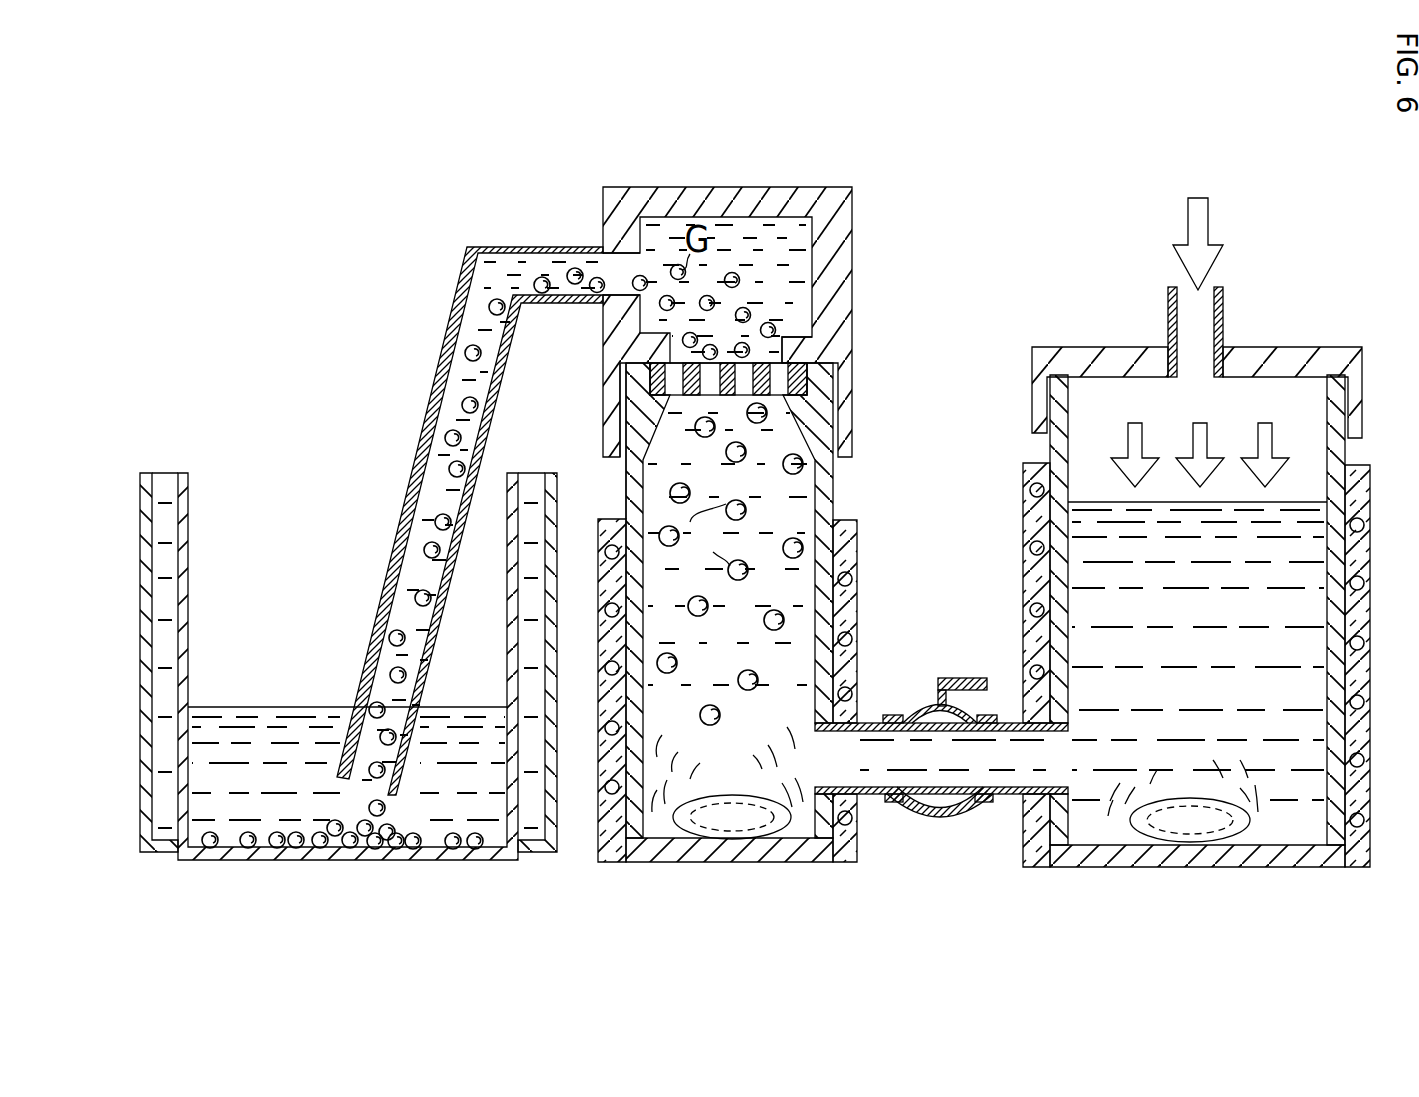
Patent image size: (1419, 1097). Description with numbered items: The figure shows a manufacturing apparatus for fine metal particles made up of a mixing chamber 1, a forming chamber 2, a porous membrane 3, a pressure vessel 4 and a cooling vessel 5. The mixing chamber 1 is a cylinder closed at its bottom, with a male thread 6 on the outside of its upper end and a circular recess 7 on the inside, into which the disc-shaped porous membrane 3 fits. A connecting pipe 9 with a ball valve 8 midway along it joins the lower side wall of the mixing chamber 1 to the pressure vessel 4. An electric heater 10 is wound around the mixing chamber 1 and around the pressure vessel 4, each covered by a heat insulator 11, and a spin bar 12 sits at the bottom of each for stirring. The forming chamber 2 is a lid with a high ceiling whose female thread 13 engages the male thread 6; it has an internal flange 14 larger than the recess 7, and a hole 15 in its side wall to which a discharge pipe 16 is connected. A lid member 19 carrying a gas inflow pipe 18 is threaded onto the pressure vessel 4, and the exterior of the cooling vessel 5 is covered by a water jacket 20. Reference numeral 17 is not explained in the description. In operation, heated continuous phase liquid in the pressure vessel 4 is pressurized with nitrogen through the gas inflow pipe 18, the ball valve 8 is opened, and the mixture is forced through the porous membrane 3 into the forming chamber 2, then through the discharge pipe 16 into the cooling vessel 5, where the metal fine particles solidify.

The mixing chamber 1 is at (868, 501).
The forming chamber 2 is at (884, 217).
The porous membrane 3 is at (903, 378).
The pressure vessel 4 is at (1066, 450).
The cooling vessel 5 is at (388, 475).
The male thread 6 is at (615, 474).
The circular recess 7 is at (797, 359).
The ball valve 8 is at (945, 700).
The connecting pipe 9 is at (863, 714).
The electric heater 10 is at (851, 578).
The heat insulator 11 is at (598, 625).
The spin bar 12 is at (1118, 823).
The female thread 13 is at (620, 380).
The internal flange 14 is at (795, 345).
The hole 15 is at (595, 253).
The discharge pipe 16 is at (495, 247).
The granule particles 17 is at (724, 280).
The gas inflow pipe 18 is at (1224, 316).
The lid member 19 is at (1300, 350).
The water jacket 20 is at (162, 475).